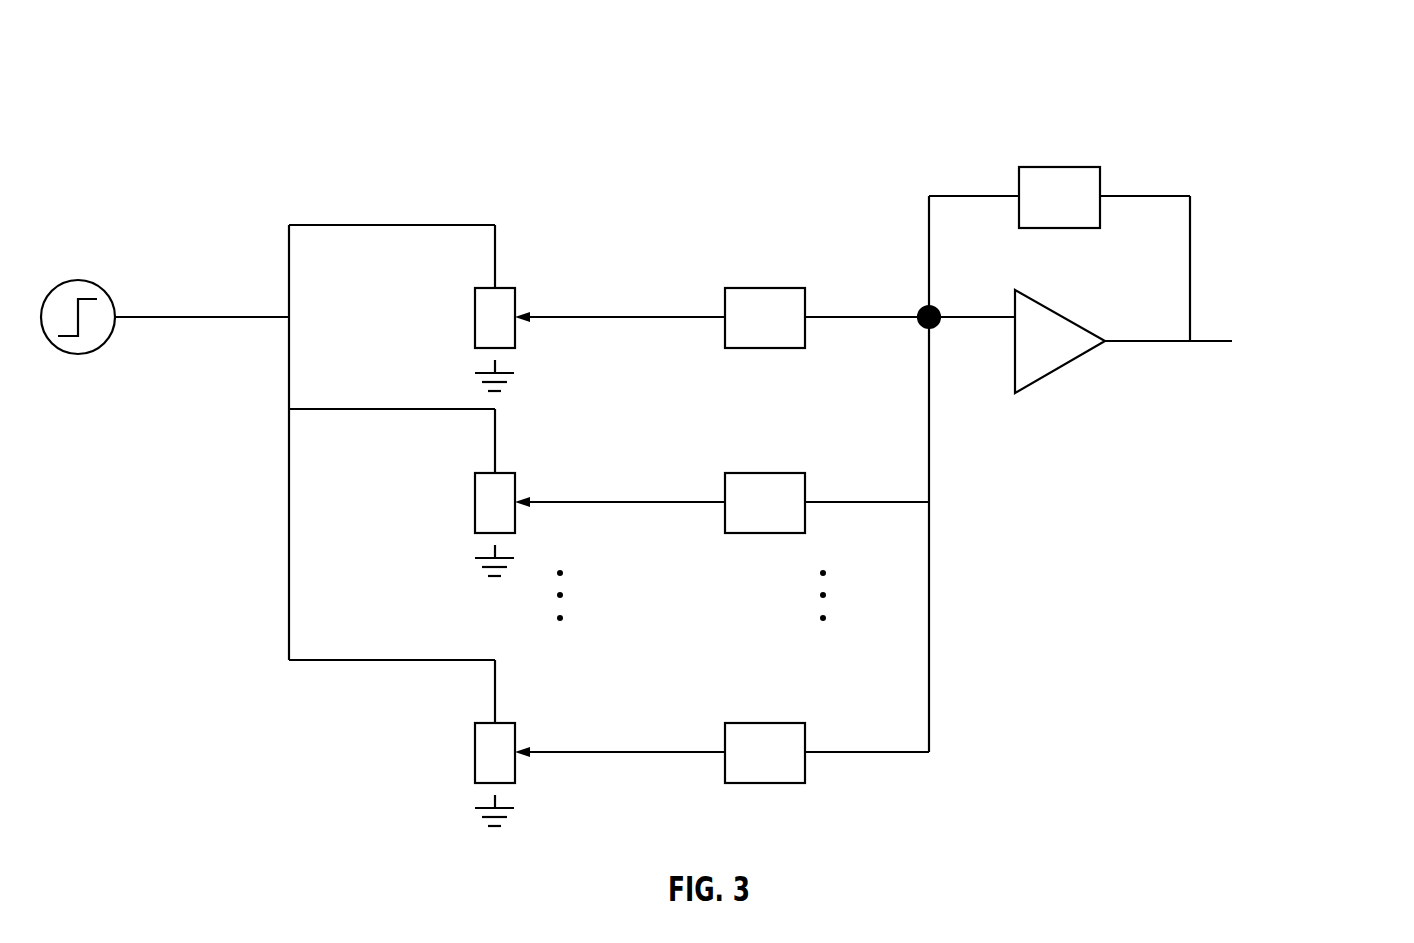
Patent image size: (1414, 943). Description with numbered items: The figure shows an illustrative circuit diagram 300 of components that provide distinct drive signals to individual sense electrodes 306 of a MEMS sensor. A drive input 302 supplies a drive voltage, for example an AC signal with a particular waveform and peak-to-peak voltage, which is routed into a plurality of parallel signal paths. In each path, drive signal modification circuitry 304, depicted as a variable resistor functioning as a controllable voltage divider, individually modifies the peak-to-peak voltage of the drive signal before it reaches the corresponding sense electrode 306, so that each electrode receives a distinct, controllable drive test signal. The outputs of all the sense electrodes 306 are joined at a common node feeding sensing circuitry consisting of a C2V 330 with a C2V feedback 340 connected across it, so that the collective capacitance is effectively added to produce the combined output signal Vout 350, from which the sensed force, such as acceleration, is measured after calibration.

The circuit diagram 300 is at (122, 66).
The drive input 302 is at (78, 281).
The drive signal modification circuitry 304 is at (498, 287).
The sense electrode 306 is at (765, 287).
The C2V 330 is at (1060, 368).
The C2V feedback 340 is at (1060, 167).
The combined output signal Vout 350 is at (1297, 332).